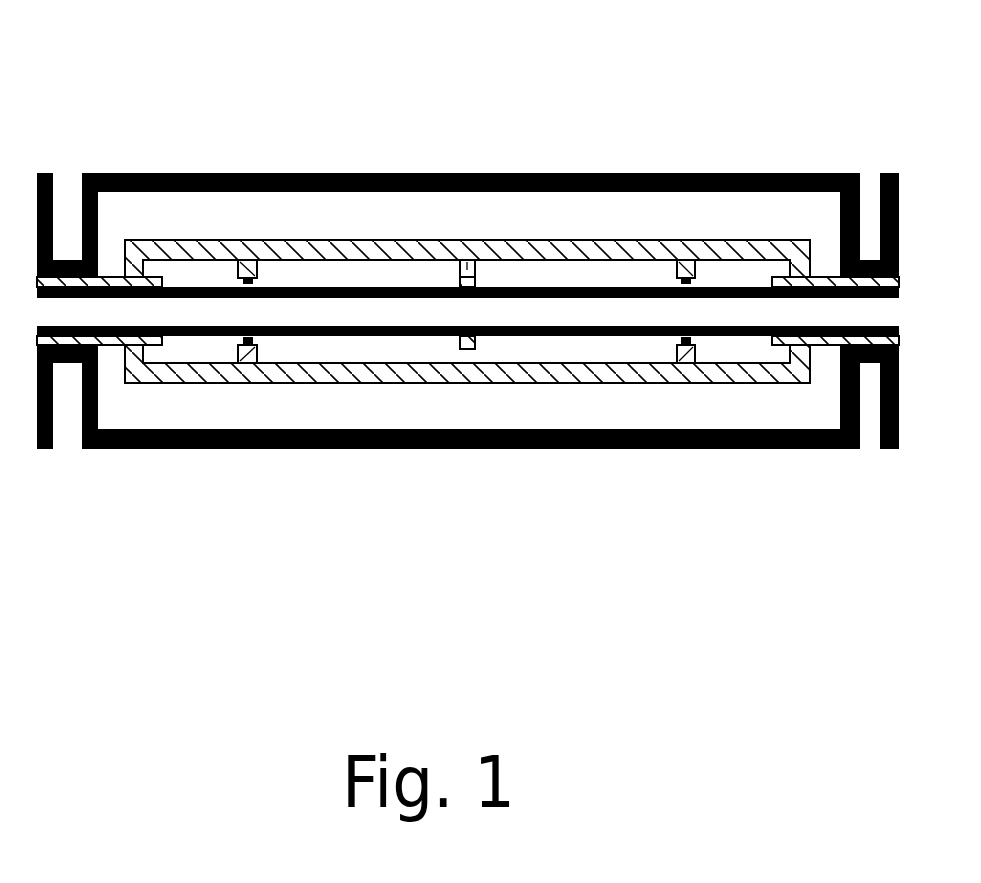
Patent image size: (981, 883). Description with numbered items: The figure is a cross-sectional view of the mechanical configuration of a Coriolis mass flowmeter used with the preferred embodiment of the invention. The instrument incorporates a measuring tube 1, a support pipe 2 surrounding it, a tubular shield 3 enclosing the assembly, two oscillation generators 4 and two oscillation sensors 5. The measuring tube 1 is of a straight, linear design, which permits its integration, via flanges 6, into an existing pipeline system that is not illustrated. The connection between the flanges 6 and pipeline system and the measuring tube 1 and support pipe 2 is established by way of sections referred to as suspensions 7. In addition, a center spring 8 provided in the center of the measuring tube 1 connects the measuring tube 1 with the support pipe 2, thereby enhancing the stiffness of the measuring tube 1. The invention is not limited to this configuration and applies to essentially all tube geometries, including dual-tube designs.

The measuring tube 1 is at (523, 287).
The support pipe 2 is at (415, 255).
The tubular shield 3 is at (353, 173).
The oscillation generator 4 is at (243, 240).
The oscillation sensor 5 is at (250, 348).
The flange 6 is at (900, 205).
The suspension 7 is at (112, 235).
The center spring 8 is at (470, 260).